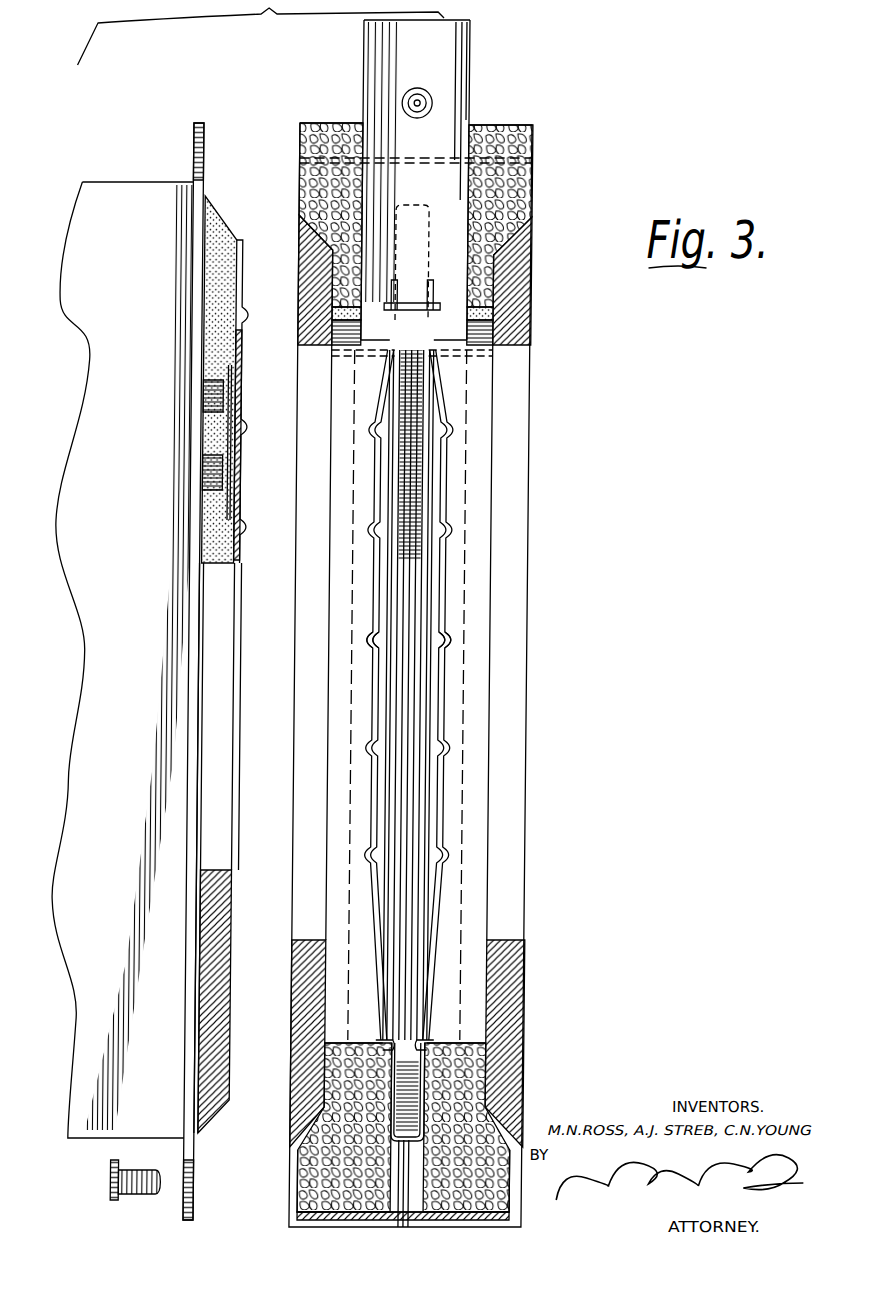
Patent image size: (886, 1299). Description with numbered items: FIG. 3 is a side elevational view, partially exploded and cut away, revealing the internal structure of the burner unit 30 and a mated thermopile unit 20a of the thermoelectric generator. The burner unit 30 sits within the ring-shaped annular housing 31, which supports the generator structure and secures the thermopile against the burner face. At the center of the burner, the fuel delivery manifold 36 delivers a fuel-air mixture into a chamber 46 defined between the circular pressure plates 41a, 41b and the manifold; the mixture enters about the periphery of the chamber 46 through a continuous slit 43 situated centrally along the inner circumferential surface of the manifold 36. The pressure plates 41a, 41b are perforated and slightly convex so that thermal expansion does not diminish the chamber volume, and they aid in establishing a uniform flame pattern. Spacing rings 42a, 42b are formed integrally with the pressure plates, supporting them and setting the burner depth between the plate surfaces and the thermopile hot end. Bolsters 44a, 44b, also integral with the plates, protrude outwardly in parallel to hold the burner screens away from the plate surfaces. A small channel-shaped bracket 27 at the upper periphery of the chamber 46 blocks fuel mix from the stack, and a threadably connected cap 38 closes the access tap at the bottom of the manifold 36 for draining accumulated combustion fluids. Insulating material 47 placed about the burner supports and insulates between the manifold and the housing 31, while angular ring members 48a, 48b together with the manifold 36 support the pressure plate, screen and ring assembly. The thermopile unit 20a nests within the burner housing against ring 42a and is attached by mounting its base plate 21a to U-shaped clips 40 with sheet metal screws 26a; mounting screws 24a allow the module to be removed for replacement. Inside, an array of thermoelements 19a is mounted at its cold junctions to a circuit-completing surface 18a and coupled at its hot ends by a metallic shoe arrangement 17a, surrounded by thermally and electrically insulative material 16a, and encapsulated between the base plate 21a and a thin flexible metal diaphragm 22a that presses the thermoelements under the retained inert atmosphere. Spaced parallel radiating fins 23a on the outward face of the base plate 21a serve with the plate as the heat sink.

The thermopile unit 20a is at (172, 128).
The base plate 21a is at (195, 165).
The flexible metal diaphragm 22a is at (228, 235).
The radiating fins 23a is at (95, 325).
The mounting screws 24a is at (187, 1195).
The sheet metal screws 26a is at (121, 1188).
The thermally and electrically insulative material 16a is at (240, 262).
The metallic shoe arrangement 17a is at (240, 395).
The circuit-completing surface 18a is at (210, 392).
The thermoelements 19a is at (210, 465).
The burner unit 30 is at (478, 79).
The annular housing 31 is at (325, 123).
The channel-shaped bracket 27 is at (410, 286).
The fuel delivery manifold 36 is at (530, 272).
The cap 38 is at (315, 1229).
The U-shaped clips 40 is at (395, 1168).
The pressure plate 41a is at (373, 578).
The pressure plate 41b is at (433, 570).
The spacing ring 42a is at (340, 315).
The spacing ring 42b is at (497, 318).
The slit 43 is at (410, 432).
The bolsters 44a is at (378, 622).
The bolsters 44b is at (438, 625).
The chamber 46 is at (410, 508).
The insulating material 47 is at (302, 160).
The angular ring member 48a is at (372, 1040).
The angular ring member 48b is at (430, 1040).